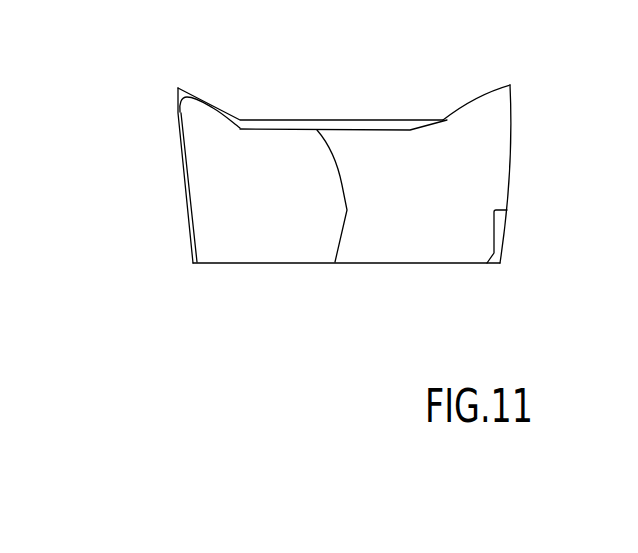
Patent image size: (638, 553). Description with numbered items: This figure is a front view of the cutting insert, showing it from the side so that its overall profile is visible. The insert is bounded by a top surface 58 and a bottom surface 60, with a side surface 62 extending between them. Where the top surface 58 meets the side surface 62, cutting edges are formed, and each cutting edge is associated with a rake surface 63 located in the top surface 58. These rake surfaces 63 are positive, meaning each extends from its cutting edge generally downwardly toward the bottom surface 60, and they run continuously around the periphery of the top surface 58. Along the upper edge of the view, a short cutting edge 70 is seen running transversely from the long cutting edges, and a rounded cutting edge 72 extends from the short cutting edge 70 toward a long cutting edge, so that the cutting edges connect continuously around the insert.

The top surface 58 is at (382, 99).
The bottom surface 60 is at (348, 277).
The side surface 62 is at (172, 192).
The rake surface 63 is at (208, 110).
The short cutting edge 70 is at (277, 120).
The rounded cutting edge 72 is at (484, 100).